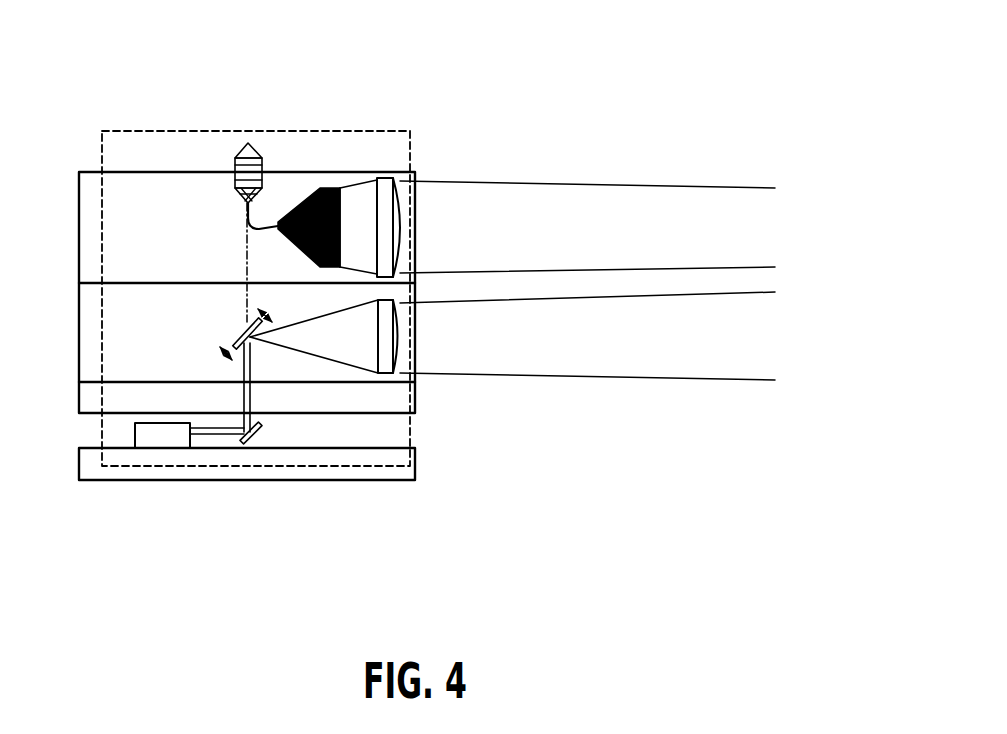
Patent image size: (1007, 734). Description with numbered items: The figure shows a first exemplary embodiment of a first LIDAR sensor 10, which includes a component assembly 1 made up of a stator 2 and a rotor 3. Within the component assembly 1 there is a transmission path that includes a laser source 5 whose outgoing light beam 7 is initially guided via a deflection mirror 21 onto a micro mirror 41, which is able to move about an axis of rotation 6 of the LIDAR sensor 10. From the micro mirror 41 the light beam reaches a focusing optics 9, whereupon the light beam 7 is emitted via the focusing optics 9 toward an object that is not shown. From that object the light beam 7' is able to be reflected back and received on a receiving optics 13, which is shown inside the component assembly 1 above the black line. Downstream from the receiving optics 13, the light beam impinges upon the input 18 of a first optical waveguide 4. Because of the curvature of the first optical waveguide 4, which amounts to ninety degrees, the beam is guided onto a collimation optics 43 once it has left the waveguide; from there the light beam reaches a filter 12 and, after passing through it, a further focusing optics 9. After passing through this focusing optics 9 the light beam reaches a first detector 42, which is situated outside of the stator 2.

The component assembly 1 is at (387, 131).
The stator 2 is at (92, 463).
The rotor 3 is at (90, 400).
The first optical waveguide 4 is at (320, 190).
The laser source 5 is at (172, 437).
The axis of rotation 6 is at (247, 258).
The light beam 7 is at (587, 383).
The light beam 7' is at (587, 191).
The focusing optics 9 is at (403, 338).
The first LIDAR sensor 10 is at (441, 106).
The filter 12 is at (236, 172).
The receiving optics 13 is at (403, 228).
The input 18 is at (336, 188).
The deflection mirror 21 is at (262, 440).
The micro mirror 41 is at (238, 343).
The first detector 42 is at (248, 143).
The collimation optics 43 is at (237, 188).